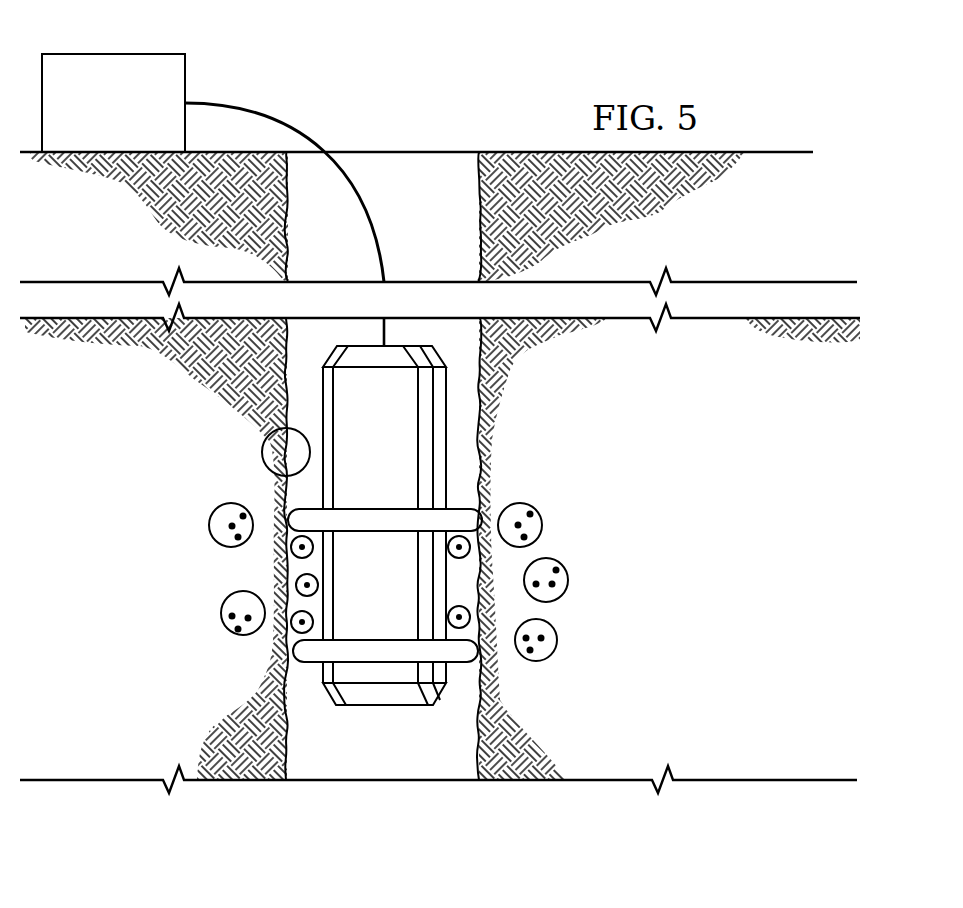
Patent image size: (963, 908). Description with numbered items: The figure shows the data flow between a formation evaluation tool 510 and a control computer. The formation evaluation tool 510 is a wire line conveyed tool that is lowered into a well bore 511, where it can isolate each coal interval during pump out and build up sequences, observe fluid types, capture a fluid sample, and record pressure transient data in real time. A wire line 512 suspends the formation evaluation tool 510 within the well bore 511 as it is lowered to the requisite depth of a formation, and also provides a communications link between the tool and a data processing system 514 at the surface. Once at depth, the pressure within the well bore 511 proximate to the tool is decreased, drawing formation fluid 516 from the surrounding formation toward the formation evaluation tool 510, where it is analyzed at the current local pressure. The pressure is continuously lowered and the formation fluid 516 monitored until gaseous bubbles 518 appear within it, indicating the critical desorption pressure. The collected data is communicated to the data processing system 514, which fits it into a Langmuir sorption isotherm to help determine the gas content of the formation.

The formation evaluation tool 510 is at (393, 732).
The well bore 511 is at (284, 478).
The wire line 512 is at (303, 131).
The data processing system 514 is at (85, 54).
The formation fluid 516 is at (538, 507).
The gaseous bubbles 518 is at (558, 641).